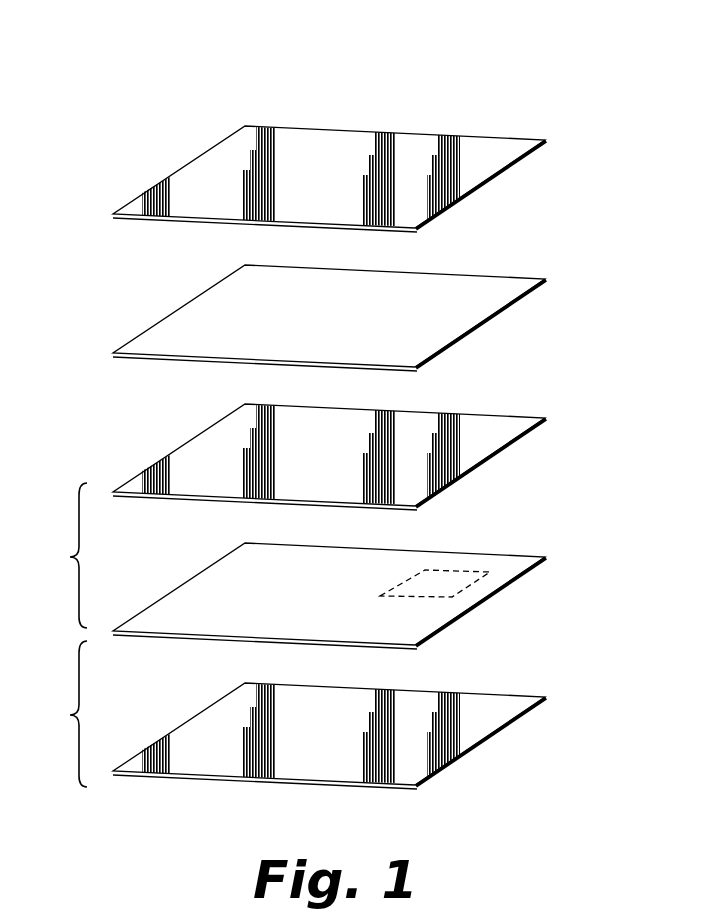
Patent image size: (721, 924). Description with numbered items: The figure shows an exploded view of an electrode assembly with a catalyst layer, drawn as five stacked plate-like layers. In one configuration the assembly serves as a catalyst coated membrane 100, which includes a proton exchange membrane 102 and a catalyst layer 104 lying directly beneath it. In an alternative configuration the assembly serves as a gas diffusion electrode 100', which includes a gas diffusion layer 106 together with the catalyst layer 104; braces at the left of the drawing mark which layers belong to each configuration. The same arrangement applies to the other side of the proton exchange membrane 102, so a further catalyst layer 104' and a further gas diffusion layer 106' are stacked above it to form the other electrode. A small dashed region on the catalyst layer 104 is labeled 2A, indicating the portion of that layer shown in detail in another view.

The multilayer ceramic package assembly 100 is at (56, 555).
The second multilayer assembly 100' is at (56, 714).
The metallized ceramic layer 102 is at (488, 415).
The ceramic layer with embedded component 104 is at (379, 560).
The ceramic layer 104' is at (342, 273).
The metallized ceramic layer 106 is at (342, 692).
The metallized ceramic layer 106' is at (342, 133).
The section detail region of FIG. 2A is at (457, 571).